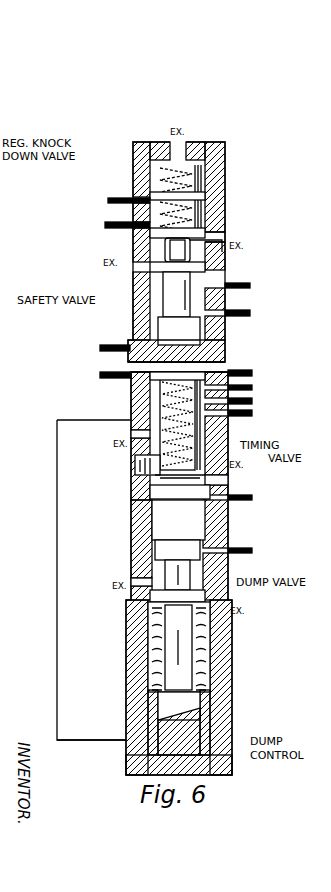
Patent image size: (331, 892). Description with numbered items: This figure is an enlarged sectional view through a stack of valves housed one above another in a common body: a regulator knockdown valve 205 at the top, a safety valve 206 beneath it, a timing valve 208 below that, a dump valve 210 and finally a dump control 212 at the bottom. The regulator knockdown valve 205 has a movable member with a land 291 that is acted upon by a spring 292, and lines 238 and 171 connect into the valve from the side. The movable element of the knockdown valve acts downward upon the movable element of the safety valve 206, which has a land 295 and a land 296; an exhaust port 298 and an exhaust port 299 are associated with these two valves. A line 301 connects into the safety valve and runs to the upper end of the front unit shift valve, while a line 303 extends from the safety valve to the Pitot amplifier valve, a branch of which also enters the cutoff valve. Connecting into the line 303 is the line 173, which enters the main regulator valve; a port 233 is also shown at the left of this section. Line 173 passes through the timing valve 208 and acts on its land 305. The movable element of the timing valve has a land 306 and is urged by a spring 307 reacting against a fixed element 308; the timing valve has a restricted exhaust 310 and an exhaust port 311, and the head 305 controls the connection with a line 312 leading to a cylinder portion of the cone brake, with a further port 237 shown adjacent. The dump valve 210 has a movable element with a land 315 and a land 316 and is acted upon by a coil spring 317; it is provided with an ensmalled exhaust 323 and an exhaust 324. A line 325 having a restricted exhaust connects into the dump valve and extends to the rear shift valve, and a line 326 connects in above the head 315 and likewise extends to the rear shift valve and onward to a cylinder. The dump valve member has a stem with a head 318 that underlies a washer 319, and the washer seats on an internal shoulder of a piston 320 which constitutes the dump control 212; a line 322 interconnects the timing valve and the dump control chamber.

The regulator knockdown valve 205 is at (243, 168).
The spring 292 is at (170, 172).
The line 238 is at (122, 186).
The line 171 is at (108, 222).
The exhaust port 298 is at (133, 248).
The land 291 is at (222, 232).
The exhaust port 299 is at (224, 237).
The land 295 is at (228, 271).
The safety valve 206 is at (119, 324).
The line 301 is at (247, 287).
The line 303 is at (247, 315).
The land 296 is at (226, 340).
The port 233 is at (108, 345).
The line 173 is at (238, 372).
The timing valve 208 is at (243, 492).
The land 305 is at (230, 386).
The port 237 is at (248, 402).
The line 312 is at (248, 416).
The land 306 is at (225, 450).
The restricted exhaust 310 is at (175, 468).
The spring 307 is at (137, 465).
The exhaust port 311 is at (236, 486).
The fixed element 308 is at (165, 494).
The line 326 is at (253, 498).
The land 315 is at (205, 540).
The dump valve 210 is at (249, 570).
The line 325 is at (242, 553).
The ensmalled exhaust 323 is at (131, 582).
The land 316 is at (232, 594).
The exhaust 324 is at (230, 622).
The coil spring 317 is at (200, 630).
The head 318 is at (226, 688).
The dump control 212 is at (249, 696).
The piston 320 is at (228, 716).
The line 322 is at (58, 528).
The washer 319 is at (130, 686).